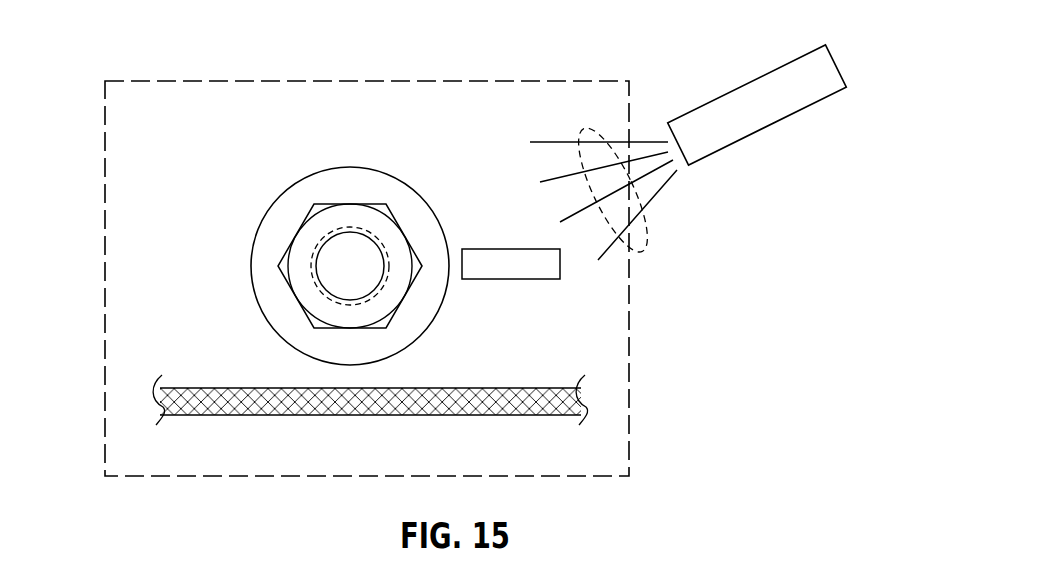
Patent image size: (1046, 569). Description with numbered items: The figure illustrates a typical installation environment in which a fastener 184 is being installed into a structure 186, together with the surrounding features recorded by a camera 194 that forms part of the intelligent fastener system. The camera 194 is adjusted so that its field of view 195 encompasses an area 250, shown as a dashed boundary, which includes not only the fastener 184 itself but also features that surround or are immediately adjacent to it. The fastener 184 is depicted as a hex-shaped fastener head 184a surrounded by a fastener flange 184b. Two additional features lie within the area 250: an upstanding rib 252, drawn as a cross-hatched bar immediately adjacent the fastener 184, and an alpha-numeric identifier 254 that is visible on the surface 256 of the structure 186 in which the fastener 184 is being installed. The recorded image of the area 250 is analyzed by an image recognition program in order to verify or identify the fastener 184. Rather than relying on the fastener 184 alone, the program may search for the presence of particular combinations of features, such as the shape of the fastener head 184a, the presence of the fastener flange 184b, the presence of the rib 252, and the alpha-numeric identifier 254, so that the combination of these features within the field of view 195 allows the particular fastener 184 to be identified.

The structure 186 is at (160, 110).
The area 250 is at (462, 80).
The surface 256 is at (170, 233).
The fastener 184 is at (272, 187).
The fastener head 184a is at (360, 207).
The fastener flange 184b is at (413, 214).
The upstanding rib 252 is at (460, 402).
The alpha-numeric identifier 254 is at (562, 262).
The field of view 195 is at (655, 228).
The camera 194 is at (747, 82).